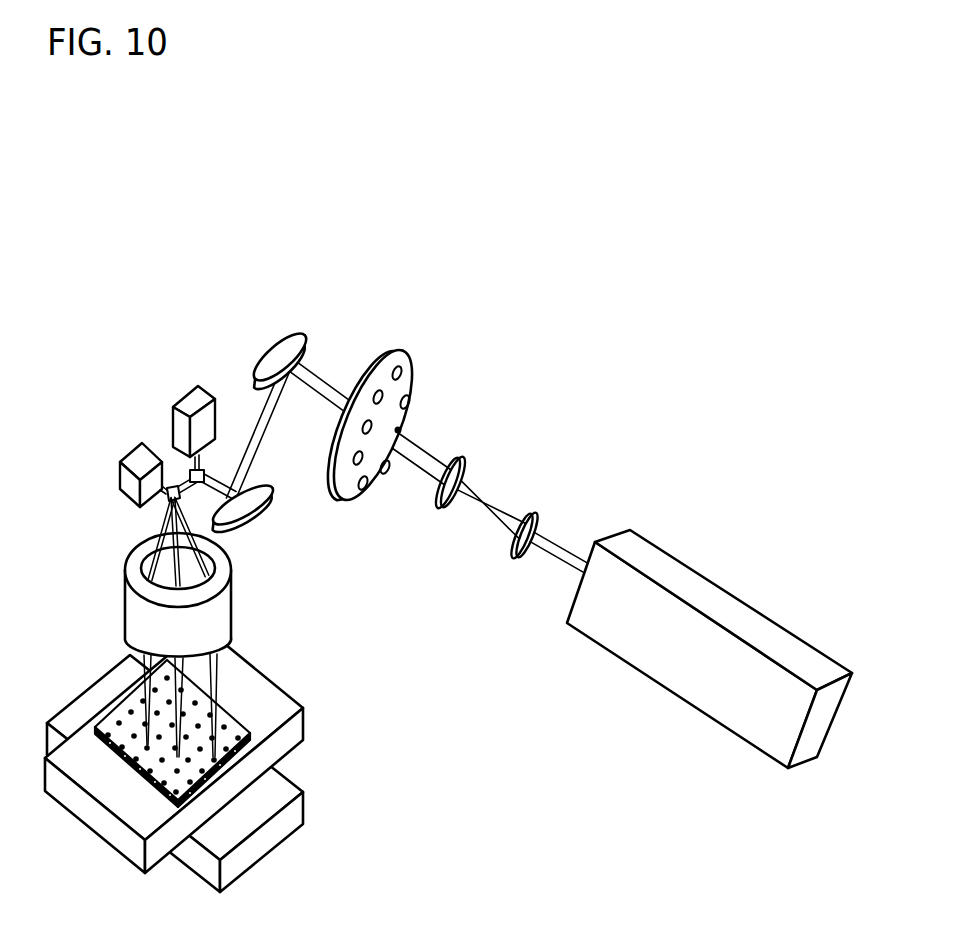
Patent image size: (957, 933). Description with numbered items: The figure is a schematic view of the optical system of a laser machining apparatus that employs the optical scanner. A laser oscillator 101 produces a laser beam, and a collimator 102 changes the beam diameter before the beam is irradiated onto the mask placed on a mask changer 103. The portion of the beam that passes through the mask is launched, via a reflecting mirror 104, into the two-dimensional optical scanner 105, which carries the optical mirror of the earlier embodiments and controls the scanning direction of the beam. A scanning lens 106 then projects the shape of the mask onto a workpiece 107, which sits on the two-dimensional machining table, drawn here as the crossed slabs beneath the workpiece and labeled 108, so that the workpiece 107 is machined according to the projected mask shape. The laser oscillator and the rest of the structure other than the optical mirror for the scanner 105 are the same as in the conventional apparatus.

The laser oscillator 101 is at (668, 568).
The collimator 102 is at (559, 494).
The mask changer 103 is at (420, 355).
The reflecting mirror 104 is at (282, 353).
The optical scanner 105 is at (176, 376).
The scanning lens 106 is at (135, 577).
The workpiece 107 is at (226, 747).
The XY stage 108 is at (113, 825).